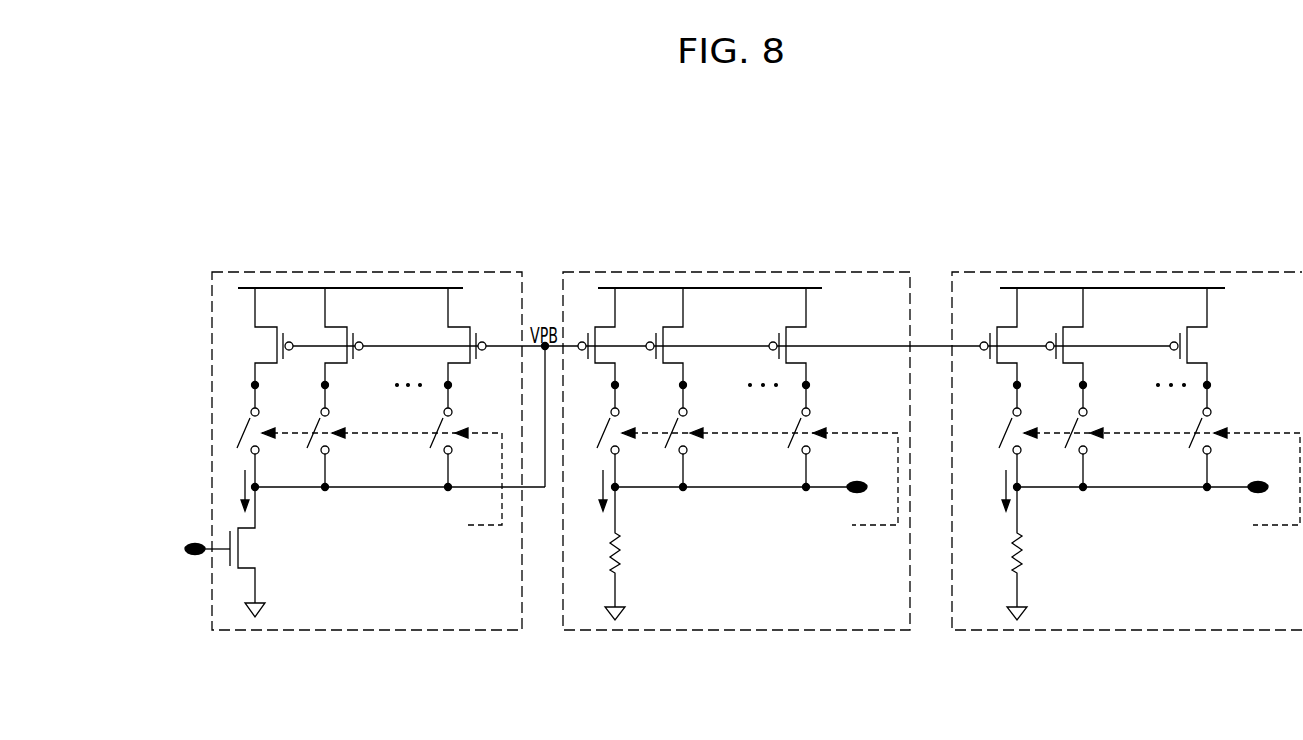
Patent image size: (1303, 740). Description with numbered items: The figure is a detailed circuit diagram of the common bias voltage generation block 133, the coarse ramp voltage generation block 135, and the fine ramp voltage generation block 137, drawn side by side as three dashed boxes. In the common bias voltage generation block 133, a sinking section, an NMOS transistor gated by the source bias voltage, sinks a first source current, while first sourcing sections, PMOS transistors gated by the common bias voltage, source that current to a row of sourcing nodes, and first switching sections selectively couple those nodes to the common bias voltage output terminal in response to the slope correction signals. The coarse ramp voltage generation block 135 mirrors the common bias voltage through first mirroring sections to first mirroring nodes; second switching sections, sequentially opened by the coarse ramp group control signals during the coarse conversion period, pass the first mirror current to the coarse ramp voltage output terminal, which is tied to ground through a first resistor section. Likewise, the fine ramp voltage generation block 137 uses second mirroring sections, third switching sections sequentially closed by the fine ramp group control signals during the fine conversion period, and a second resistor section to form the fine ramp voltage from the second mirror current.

The common bias voltage generation block 133 is at (490, 268).
The coarse ramp voltage generation block 135 is at (858, 268).
The fine ramp voltage generation block 137 is at (1258, 268).